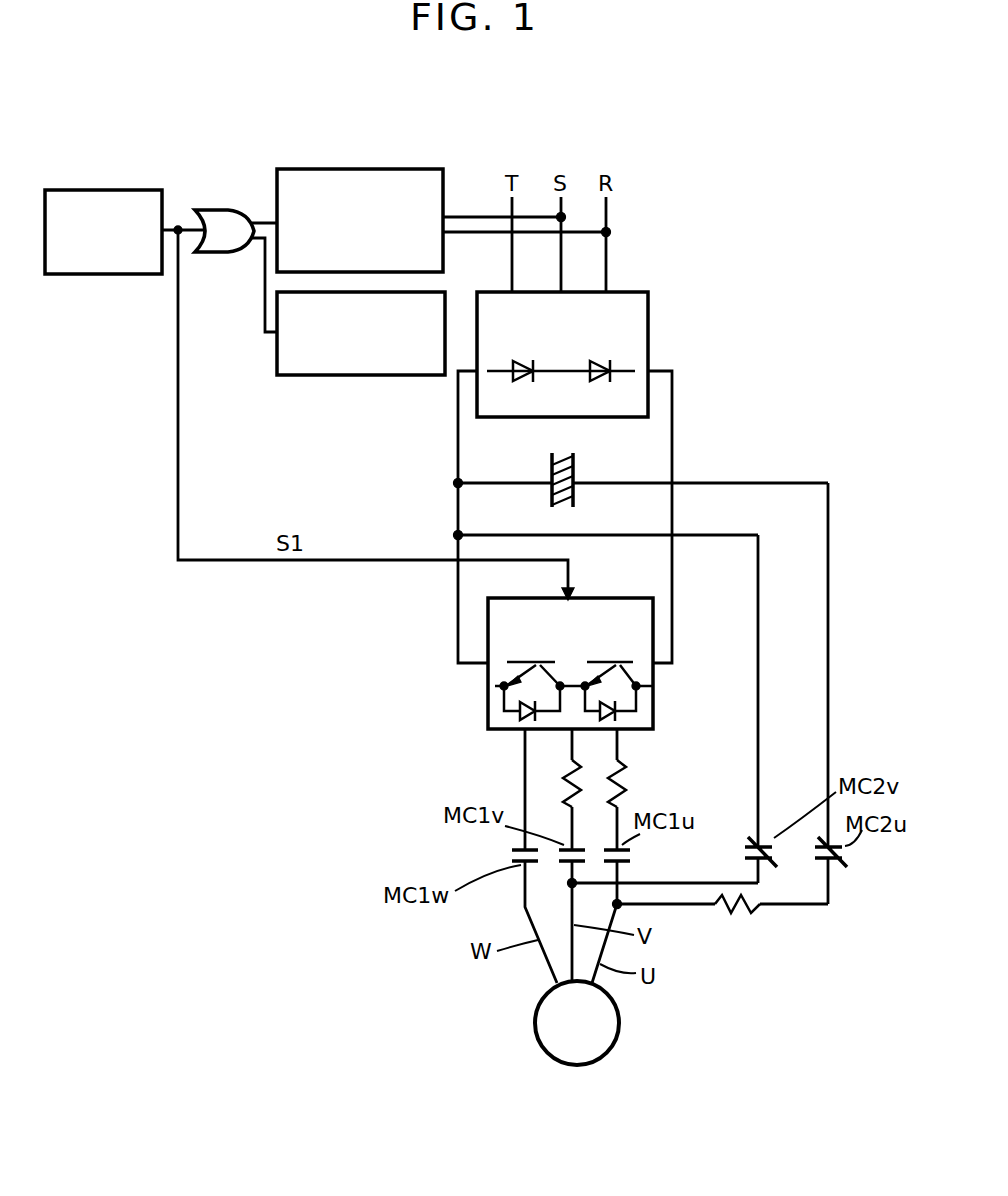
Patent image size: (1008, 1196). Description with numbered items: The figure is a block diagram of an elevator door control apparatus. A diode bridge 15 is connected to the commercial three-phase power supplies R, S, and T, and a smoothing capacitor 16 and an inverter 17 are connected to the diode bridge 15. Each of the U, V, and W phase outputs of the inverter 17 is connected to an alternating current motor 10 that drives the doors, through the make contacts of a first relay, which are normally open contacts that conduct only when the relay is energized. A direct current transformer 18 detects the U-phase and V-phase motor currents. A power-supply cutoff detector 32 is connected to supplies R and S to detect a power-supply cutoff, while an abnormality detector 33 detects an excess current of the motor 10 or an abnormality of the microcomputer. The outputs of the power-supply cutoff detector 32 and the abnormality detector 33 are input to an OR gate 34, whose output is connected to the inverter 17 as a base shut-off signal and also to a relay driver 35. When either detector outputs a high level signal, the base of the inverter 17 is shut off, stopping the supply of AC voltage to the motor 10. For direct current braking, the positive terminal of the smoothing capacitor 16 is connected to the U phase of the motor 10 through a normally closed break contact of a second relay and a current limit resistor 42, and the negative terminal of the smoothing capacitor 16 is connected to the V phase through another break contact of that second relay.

The alternating current motor 10 is at (619, 1023).
The diode bridge 15 is at (477, 310).
The smoothing capacitor 16 is at (573, 457).
The inverter 17 is at (653, 690).
The direct current transformer 18 is at (612, 767).
The power-supply cutoff detector 32 is at (445, 199).
The abnormality detector 33 is at (385, 376).
The OR gate 34 is at (232, 208).
The relay driver 35 is at (118, 190).
The current limit resistor 42 is at (726, 912).